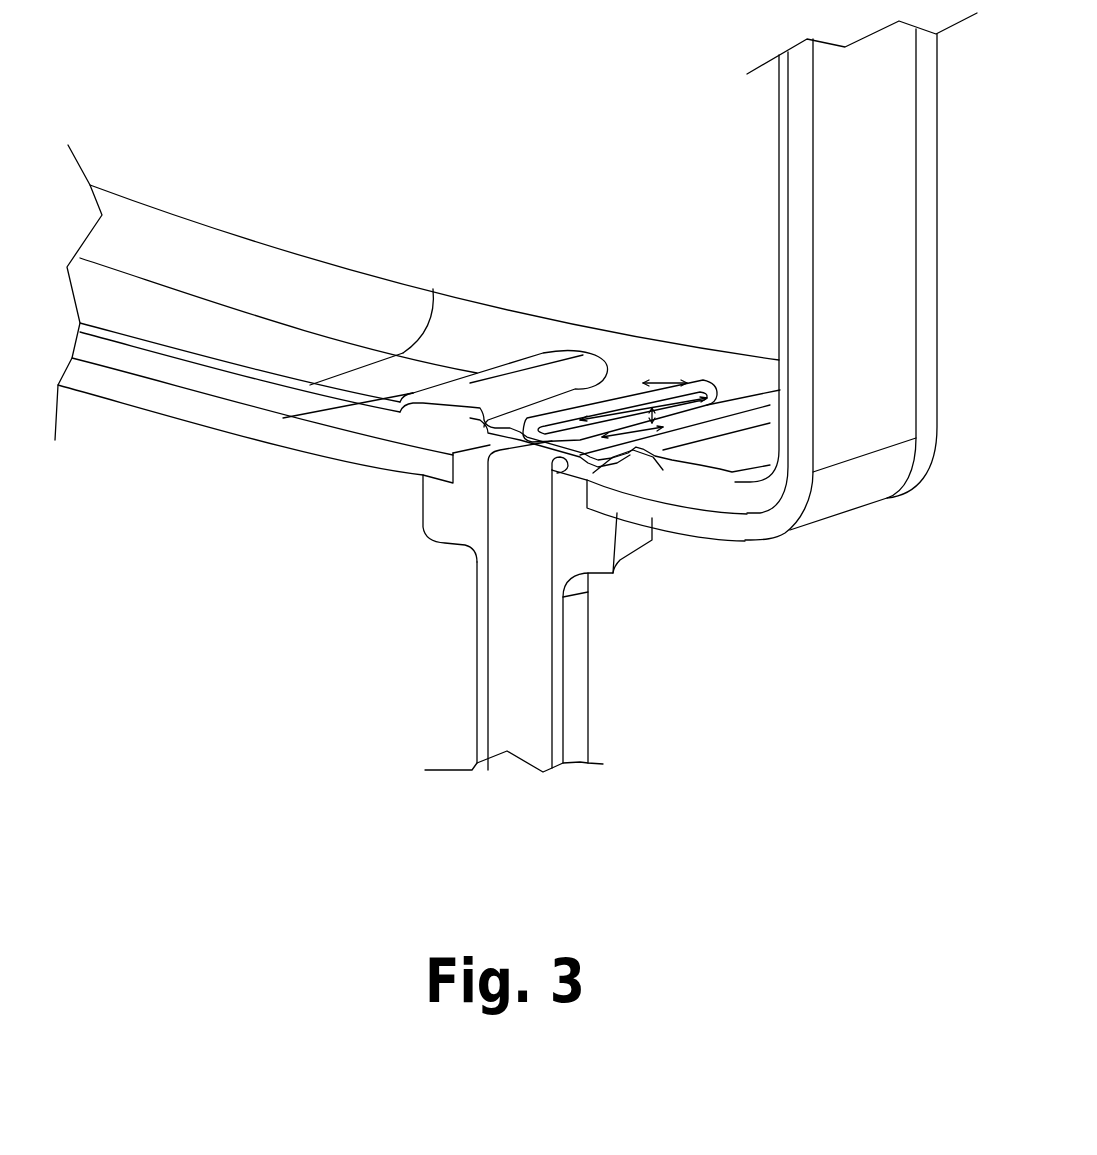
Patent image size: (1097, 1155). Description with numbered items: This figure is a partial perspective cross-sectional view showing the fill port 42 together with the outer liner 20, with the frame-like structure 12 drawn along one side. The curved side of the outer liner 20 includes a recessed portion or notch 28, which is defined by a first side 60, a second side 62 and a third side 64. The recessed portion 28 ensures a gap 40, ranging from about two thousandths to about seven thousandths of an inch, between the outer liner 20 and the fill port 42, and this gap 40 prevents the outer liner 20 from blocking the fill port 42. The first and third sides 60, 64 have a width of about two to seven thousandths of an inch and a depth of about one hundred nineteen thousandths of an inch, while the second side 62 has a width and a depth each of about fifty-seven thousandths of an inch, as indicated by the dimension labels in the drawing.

The frame member 12 is at (873, 160).
The outer liner 20 is at (270, 343).
The recessed portion 28 is at (590, 418).
The gap 40 is at (537, 437).
The fill port 42 is at (588, 717).
The first side 60 is at (523, 423).
The second side 62 is at (643, 373).
The third side 64 is at (653, 443).